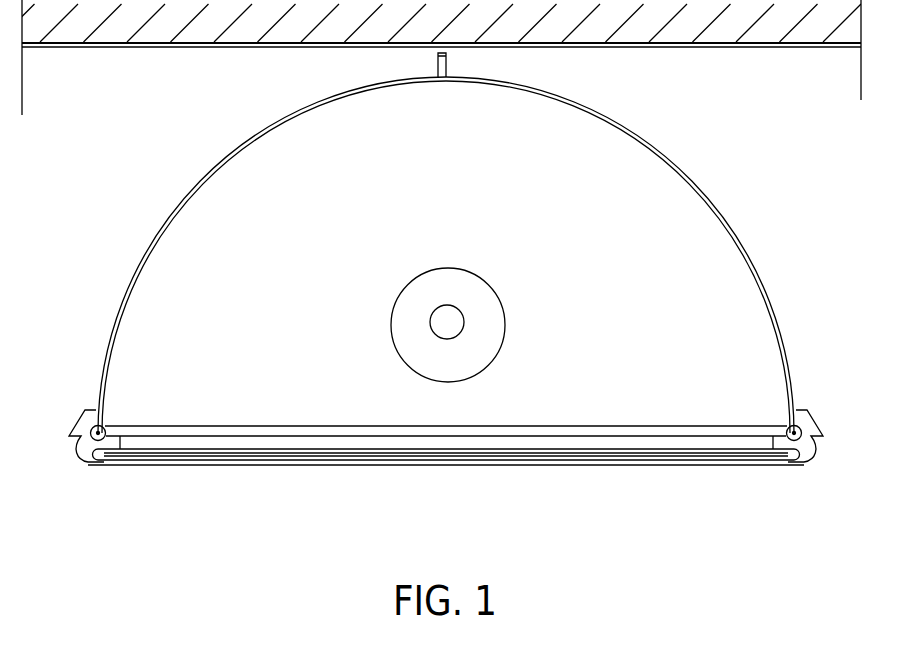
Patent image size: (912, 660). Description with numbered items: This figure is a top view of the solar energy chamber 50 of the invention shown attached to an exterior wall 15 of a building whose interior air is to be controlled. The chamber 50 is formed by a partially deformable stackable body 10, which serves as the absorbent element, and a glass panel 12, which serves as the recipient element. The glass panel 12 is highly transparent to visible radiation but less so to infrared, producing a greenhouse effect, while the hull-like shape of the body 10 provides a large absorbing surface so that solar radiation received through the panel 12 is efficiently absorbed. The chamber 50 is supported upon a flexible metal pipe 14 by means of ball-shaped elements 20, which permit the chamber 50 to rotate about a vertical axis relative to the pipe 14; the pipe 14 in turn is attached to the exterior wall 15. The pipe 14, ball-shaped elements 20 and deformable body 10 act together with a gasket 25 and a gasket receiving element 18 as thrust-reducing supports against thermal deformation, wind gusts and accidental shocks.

The partially deformable stackable body 10 is at (750, 253).
The glass panel 12 is at (725, 453).
The flexible pipe 14 is at (446, 62).
The exterior wall 15 is at (602, 47).
The gasket receiving element 18 is at (80, 460).
The ball-shaped elements 20 is at (485, 305).
The gasket 25 is at (88, 425).
The chamber 50 is at (438, 517).